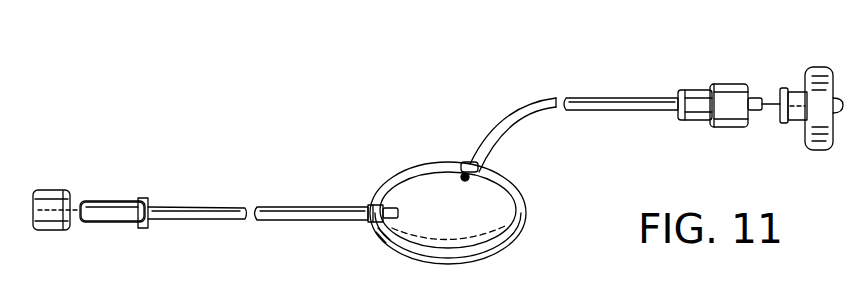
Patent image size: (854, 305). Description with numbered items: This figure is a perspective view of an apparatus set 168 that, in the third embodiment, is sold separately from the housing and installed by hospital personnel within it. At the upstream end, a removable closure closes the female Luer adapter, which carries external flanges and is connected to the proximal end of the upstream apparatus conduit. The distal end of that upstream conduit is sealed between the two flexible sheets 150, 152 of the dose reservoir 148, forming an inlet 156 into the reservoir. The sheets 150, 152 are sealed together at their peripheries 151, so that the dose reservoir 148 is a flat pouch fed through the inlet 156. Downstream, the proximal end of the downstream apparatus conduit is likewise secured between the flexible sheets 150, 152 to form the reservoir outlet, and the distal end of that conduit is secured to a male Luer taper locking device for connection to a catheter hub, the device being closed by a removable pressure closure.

The apparatus set 168 is at (221, 136).
The flexible sheet 150 is at (504, 210).
The peripheries 151 is at (523, 233).
The flexible sheet 152 is at (492, 260).
The inlet 156 is at (383, 244).
The dose reservoir 148 is at (438, 185).